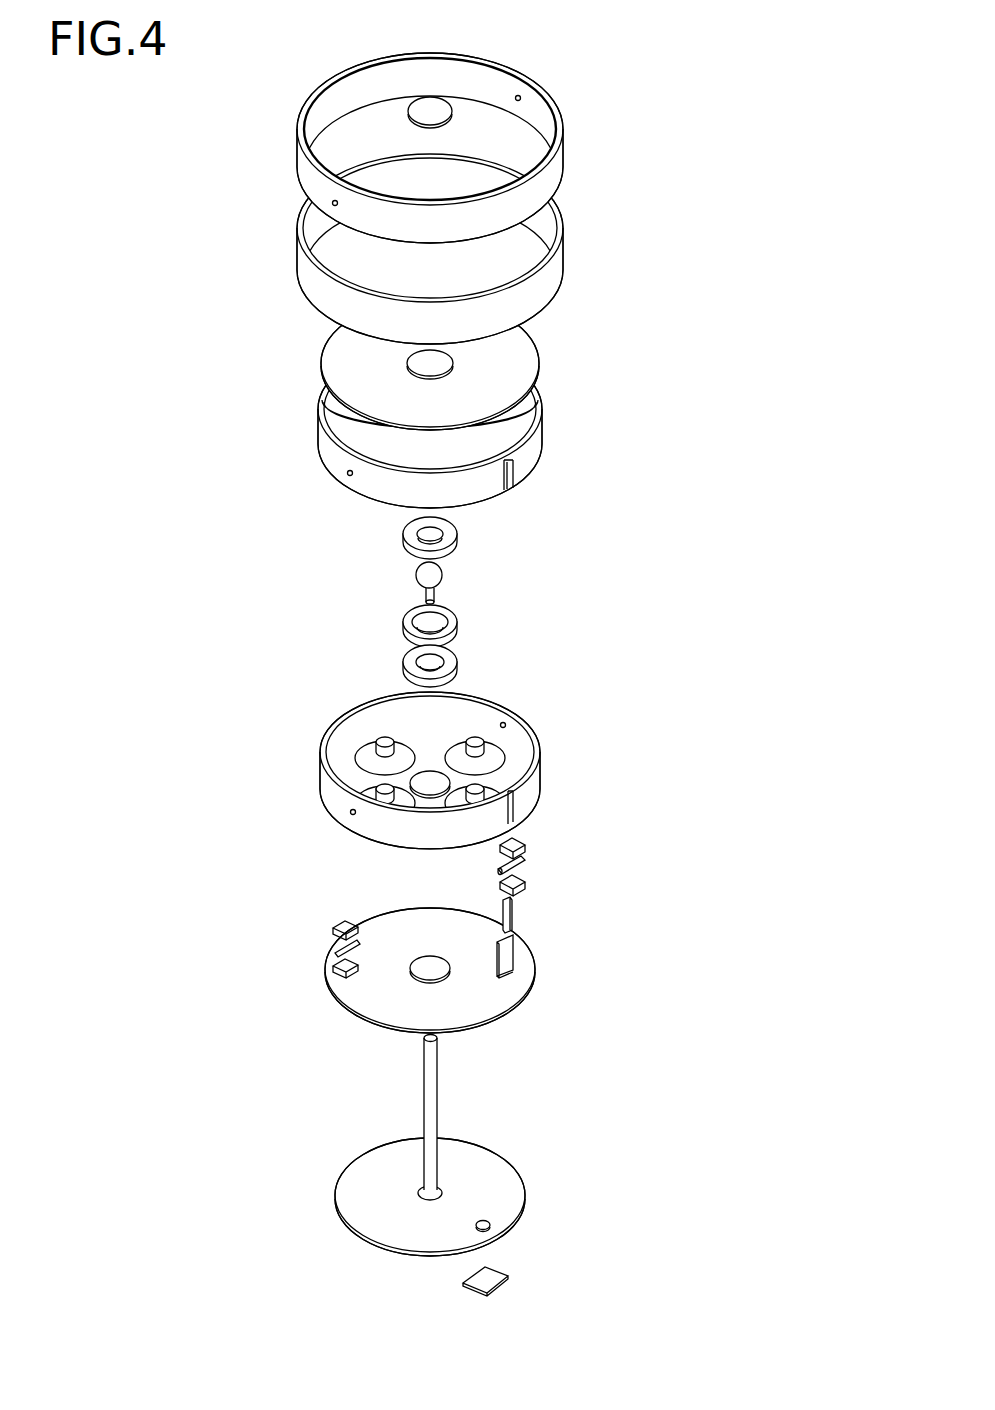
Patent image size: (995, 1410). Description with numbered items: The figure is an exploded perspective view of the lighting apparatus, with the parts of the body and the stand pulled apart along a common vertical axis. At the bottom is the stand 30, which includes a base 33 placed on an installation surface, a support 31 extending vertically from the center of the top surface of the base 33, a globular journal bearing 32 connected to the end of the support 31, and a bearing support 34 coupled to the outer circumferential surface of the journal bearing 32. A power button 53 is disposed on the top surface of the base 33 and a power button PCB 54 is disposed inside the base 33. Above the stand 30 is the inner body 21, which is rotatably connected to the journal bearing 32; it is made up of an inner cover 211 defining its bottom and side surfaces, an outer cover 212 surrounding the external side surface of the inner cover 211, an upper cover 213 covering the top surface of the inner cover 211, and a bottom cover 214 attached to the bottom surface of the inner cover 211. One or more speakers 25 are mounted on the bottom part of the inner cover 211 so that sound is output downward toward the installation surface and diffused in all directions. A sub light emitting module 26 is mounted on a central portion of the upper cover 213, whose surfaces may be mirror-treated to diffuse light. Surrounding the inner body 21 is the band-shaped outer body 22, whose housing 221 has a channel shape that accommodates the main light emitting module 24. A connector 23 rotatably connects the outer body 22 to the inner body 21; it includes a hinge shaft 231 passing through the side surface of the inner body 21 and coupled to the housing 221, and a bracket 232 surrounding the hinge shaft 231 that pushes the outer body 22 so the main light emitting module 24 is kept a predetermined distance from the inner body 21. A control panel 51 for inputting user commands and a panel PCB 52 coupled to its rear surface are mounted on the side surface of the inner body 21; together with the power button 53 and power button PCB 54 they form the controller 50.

The inner body 21 is at (208, 360).
The inner cover 211 is at (327, 785).
The outer cover 212 is at (328, 448).
The upper cover 213 is at (328, 362).
The bottom cover 214 is at (348, 988).
The outer body 22 is at (192, 180).
The housing 221 is at (303, 266).
The main light emitting module 24 is at (298, 163).
The speaker 25 is at (367, 752).
The sub light emitting module 26 is at (413, 108).
The connector 23 is at (618, 849).
The hinge shaft 231 is at (526, 861).
The bracket 232 is at (525, 887).
The stand 30 is at (695, 1143).
The support 31 is at (437, 1095).
The journal bearing 32 is at (438, 573).
The base 33 is at (503, 1177).
The bearing support 34 is at (452, 662).
The controller 50 is at (191, 1060).
The control panel 51 is at (505, 917).
The panel PCB 52 is at (505, 958).
The power button 53 is at (483, 1220).
The power button PCB 54 is at (480, 1280).